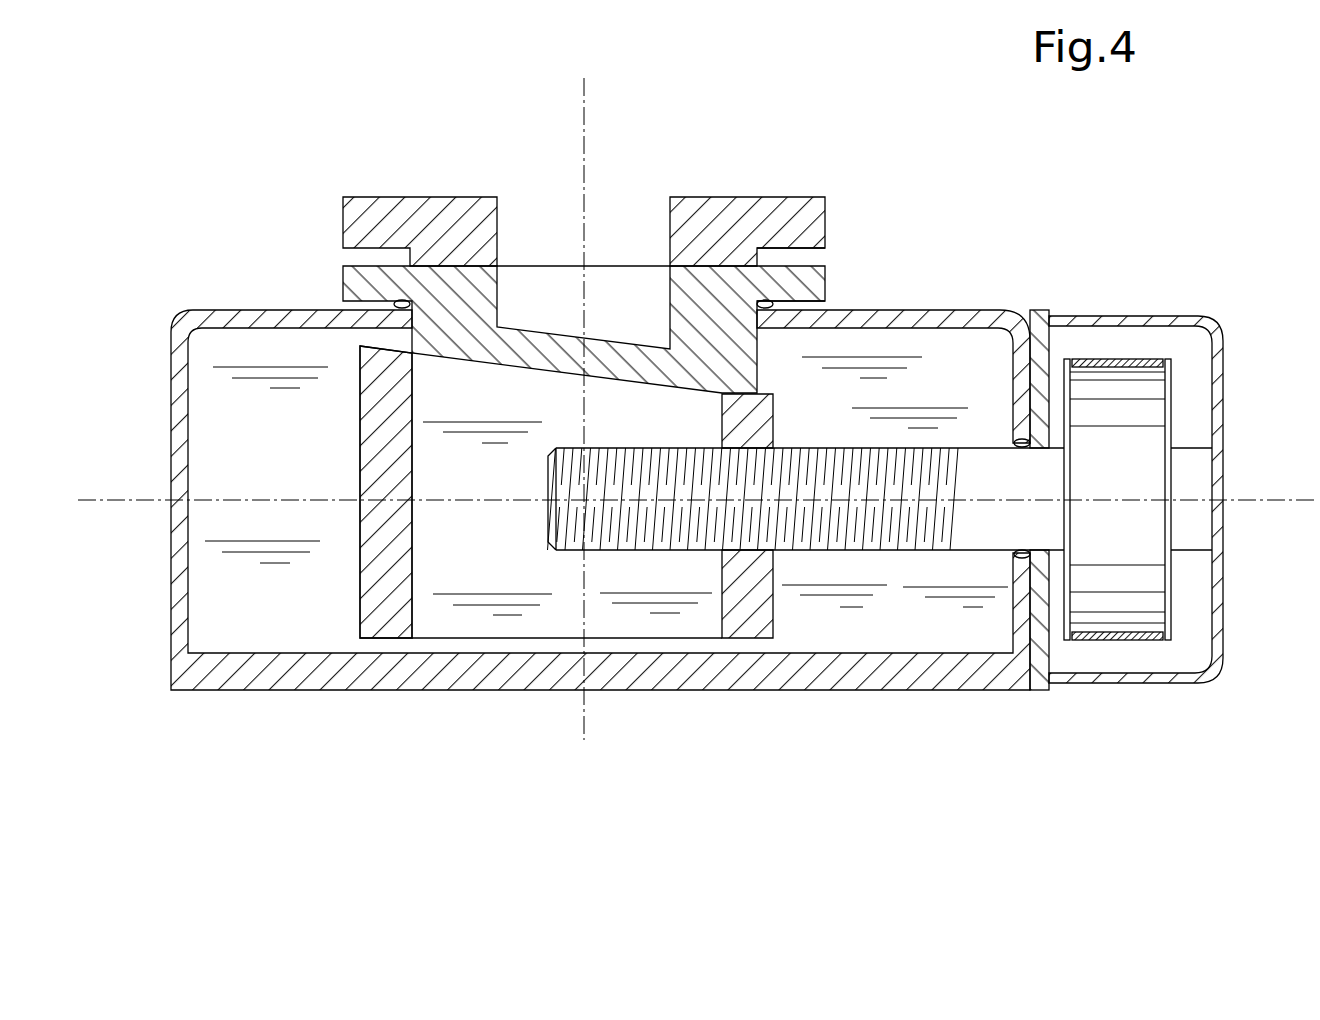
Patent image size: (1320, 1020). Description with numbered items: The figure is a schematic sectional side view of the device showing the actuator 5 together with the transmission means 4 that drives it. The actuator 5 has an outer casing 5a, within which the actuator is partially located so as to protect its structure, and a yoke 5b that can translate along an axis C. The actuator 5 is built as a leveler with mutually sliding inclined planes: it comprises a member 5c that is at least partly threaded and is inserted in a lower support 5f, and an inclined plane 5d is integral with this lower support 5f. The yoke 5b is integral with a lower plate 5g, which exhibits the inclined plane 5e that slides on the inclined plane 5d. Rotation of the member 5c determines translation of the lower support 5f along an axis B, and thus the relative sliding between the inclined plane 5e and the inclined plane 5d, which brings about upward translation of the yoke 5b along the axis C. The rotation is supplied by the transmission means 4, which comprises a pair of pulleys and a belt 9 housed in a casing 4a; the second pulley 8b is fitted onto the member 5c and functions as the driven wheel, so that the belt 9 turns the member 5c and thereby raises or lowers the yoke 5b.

The transmission means 4 is at (1175, 486).
The casing 4a is at (1133, 315).
The actuator 5 is at (573, 417).
The outer casing 5a is at (220, 310).
The yoke 5b is at (770, 197).
The member 5c is at (907, 537).
The inclined plane 5d is at (390, 347).
The inclined plane 5e is at (453, 357).
The lower support 5f is at (360, 580).
The lower plate 5g is at (817, 262).
The second pulley 8b is at (1132, 460).
The belt 9 is at (1118, 640).
The axis B is at (78, 497).
The axis C is at (584, 97).